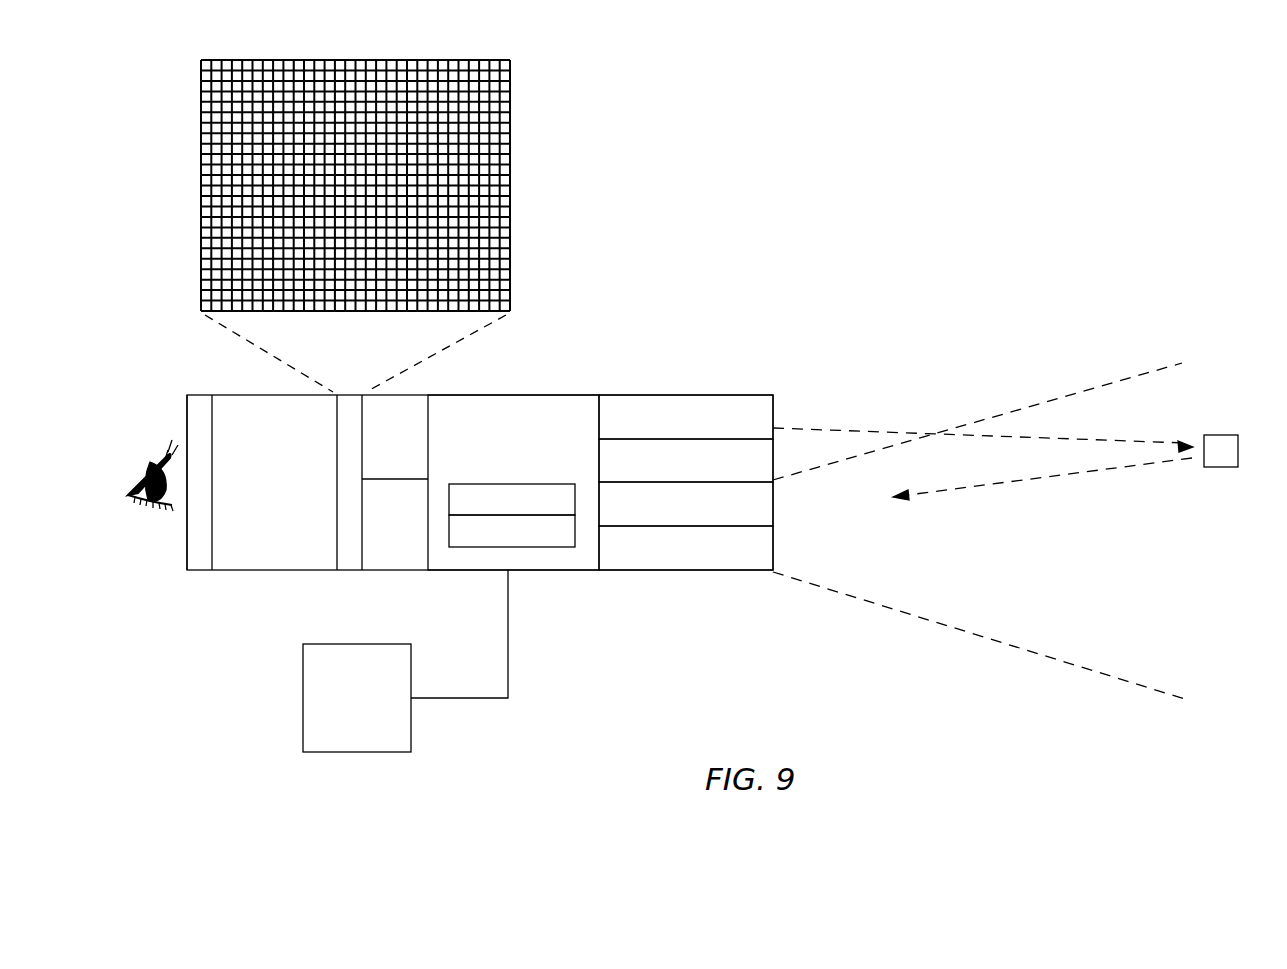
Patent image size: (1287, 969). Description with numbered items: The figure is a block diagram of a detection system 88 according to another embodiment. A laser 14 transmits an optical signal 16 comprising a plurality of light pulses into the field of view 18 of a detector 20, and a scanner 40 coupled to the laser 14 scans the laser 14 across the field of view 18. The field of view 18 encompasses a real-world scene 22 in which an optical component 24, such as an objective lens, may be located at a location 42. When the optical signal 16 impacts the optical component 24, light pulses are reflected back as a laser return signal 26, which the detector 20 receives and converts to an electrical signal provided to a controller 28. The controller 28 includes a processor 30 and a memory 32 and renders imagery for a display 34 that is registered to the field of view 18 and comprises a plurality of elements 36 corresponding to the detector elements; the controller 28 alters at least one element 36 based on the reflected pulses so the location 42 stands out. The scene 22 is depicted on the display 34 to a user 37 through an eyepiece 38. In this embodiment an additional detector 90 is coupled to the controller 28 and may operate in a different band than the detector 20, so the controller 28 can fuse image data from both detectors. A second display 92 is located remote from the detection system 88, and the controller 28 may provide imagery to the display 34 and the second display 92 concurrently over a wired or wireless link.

The laser 14 is at (765, 410).
The optical signal 16 is at (882, 433).
The field of view 18 is at (1093, 389).
The detector 20 is at (760, 499).
The scene 22 is at (1078, 558).
The optical component 24 is at (1239, 449).
The laser return signal 26 is at (976, 485).
The controller 28 is at (503, 461).
The processor 30 is at (449, 497).
The memory 32 is at (575, 535).
The display 34 is at (476, 40).
The elements 36 is at (311, 62).
The user 37 is at (158, 455).
The eyepiece 38 is at (202, 560).
The scanner 40 is at (765, 448).
The location 42 is at (1232, 407).
The detection system 88 is at (735, 340).
The additional detector 90 is at (735, 572).
The second display 92 is at (347, 710).